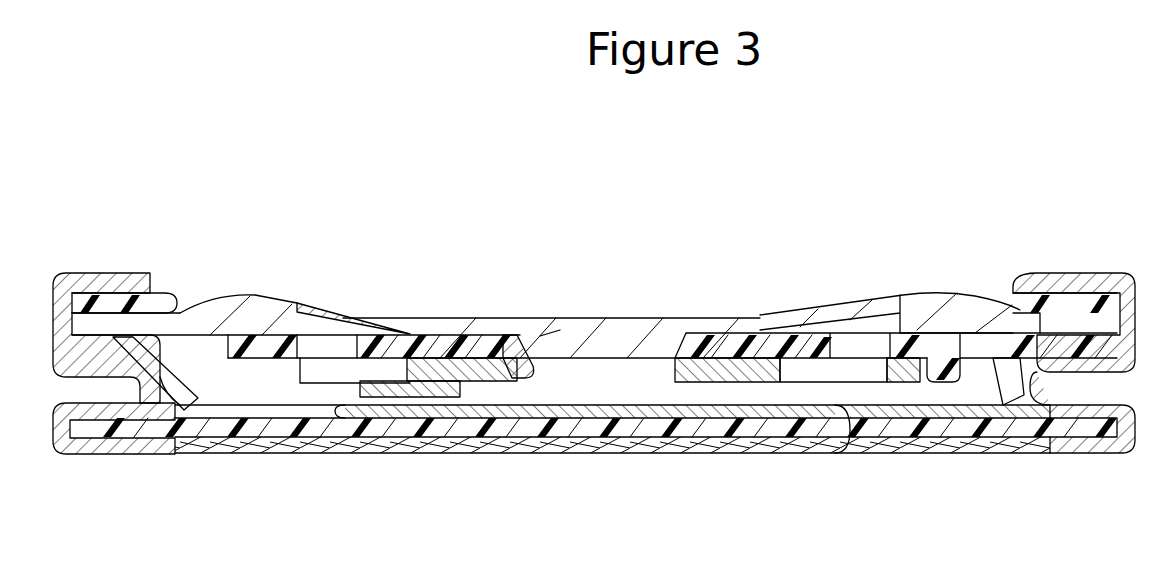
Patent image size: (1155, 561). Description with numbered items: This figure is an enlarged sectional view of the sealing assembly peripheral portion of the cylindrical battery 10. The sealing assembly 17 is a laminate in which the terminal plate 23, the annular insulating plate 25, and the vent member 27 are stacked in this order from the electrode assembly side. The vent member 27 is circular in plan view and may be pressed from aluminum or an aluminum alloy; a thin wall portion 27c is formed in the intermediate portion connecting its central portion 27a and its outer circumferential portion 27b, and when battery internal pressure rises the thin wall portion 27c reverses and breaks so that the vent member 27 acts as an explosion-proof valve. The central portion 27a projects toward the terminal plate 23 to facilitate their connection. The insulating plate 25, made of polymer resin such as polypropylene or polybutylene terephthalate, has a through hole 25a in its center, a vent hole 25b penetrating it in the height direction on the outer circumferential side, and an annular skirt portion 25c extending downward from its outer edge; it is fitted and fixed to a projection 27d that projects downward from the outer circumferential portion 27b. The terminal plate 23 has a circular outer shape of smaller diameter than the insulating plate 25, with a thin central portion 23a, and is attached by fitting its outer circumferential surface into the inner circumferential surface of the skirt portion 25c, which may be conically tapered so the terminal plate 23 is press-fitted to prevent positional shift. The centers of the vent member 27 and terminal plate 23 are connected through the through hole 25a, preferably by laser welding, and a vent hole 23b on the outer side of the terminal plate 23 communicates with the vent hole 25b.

The cylindrical battery 10 is at (598, 314).
The sealing assembly 17 is at (748, 310).
The terminal plate 23 is at (610, 458).
The central portion 23a is at (640, 440).
The vent hole 23b is at (323, 425).
The insulating plate 25 is at (594, 368).
The through hole 25a is at (520, 340).
The vent hole 25b is at (303, 345).
The skirt portion 25c is at (238, 385).
The vent member 27 is at (416, 366).
The central portion 27a is at (553, 335).
The outer circumferential portion 27b is at (263, 312).
The thin wall portion 27c is at (360, 312).
The projection 27d is at (173, 455).